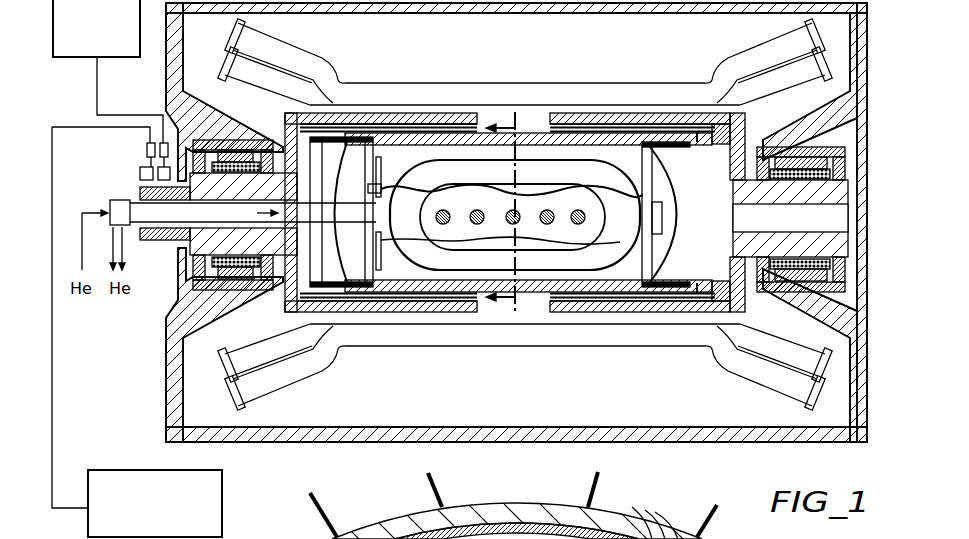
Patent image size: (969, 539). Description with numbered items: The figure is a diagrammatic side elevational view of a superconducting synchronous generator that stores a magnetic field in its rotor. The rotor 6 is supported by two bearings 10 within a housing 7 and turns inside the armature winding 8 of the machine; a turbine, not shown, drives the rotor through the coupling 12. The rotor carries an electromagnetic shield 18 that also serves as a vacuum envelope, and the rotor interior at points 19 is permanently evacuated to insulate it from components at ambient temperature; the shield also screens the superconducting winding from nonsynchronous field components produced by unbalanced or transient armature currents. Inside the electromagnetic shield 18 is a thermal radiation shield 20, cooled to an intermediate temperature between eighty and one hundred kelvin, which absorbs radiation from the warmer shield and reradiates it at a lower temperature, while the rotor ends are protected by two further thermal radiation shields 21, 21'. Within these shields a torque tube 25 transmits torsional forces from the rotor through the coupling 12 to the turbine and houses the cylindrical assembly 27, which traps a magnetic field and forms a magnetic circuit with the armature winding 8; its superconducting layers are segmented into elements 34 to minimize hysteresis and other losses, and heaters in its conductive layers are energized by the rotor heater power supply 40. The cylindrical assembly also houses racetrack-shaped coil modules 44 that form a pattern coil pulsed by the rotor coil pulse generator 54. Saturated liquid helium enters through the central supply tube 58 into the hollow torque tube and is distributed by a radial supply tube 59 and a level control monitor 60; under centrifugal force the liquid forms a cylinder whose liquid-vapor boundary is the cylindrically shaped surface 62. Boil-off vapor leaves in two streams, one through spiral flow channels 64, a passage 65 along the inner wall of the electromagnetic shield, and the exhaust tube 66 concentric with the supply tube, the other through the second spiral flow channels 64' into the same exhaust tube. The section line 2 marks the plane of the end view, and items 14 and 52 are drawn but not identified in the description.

The section line 2 is at (512, 212).
The rotor 6 is at (615, 318).
The housing 7 is at (652, 432).
The armature winding 8 is at (598, 88).
The bearings 10 is at (197, 290).
The coupling 12 is at (862, 194).
The electrical feedthrough 14 is at (145, 178).
The electromagnetic shield 18 is at (410, 305).
The points 19 is at (733, 142).
The thermal radiation shield 20 is at (458, 305).
The thermal radiation shield 21 is at (684, 214).
The thermal radiation shield 21' is at (337, 212).
The torque tube 25 is at (573, 300).
The cylindrical assembly 27 is at (383, 537).
The elements 34 is at (615, 520).
The rotor heater power supply 40 is at (85, 60).
The coil modules 44 is at (598, 256).
The heater 52 is at (476, 203).
The rotor coil pulse generator 54 is at (148, 470).
The central supply tube 58 is at (292, 218).
The radial supply tube 59 is at (360, 189).
The level control monitor 60 is at (392, 256).
The cylindrically shaped surface 62 is at (603, 195).
The spiral flow channels 64 is at (678, 214).
The spiral flow channels 64' is at (341, 212).
The passage 65 is at (395, 300).
The exhaust tube 66 is at (235, 222).